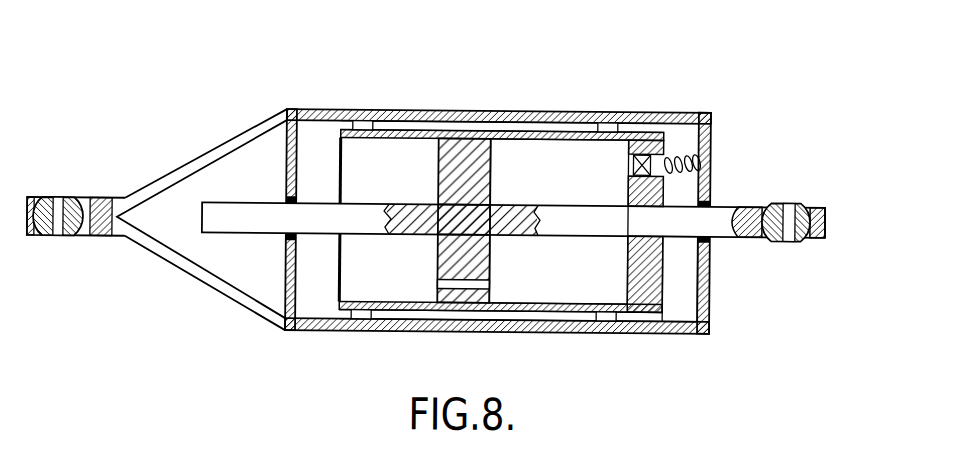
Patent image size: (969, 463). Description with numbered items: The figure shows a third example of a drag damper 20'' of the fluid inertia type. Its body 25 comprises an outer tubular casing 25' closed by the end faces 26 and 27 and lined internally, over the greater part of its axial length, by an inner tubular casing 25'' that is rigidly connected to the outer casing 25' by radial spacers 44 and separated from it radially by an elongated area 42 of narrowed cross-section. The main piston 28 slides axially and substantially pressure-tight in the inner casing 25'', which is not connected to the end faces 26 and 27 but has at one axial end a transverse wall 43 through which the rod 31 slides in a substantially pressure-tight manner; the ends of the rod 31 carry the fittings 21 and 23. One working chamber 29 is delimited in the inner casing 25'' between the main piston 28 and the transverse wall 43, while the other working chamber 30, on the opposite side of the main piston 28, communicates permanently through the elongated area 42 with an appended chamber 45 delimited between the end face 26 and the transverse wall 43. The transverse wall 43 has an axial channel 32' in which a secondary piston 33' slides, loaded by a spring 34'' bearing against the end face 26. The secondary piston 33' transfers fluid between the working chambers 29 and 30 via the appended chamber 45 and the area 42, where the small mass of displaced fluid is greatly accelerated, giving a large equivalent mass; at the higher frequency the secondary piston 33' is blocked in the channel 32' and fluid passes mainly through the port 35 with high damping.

The drag damper 20'' is at (434, 221).
The ball joint fitting 21 is at (43, 211).
The ball joint fitting 23 is at (810, 204).
The body 25 is at (496, 359).
The outer tubular casing 25' is at (499, 76).
The inner tubular casing 25'' is at (501, 175).
The end face 26 is at (707, 297).
The end face 27 is at (288, 282).
The main piston 28 is at (470, 297).
The working chamber 29 is at (593, 272).
The working chamber 30 is at (310, 294).
The rod 31 is at (718, 220).
The channel 32' is at (684, 104).
The secondary piston 33' is at (601, 174).
The spring 34'' is at (723, 140).
The port 35 is at (478, 285).
The elongated area with narrowed cross-section 42 is at (557, 127).
The transverse wall 43 is at (643, 253).
The radial spacers 44 is at (360, 125).
The appended chamber 45 is at (680, 298).